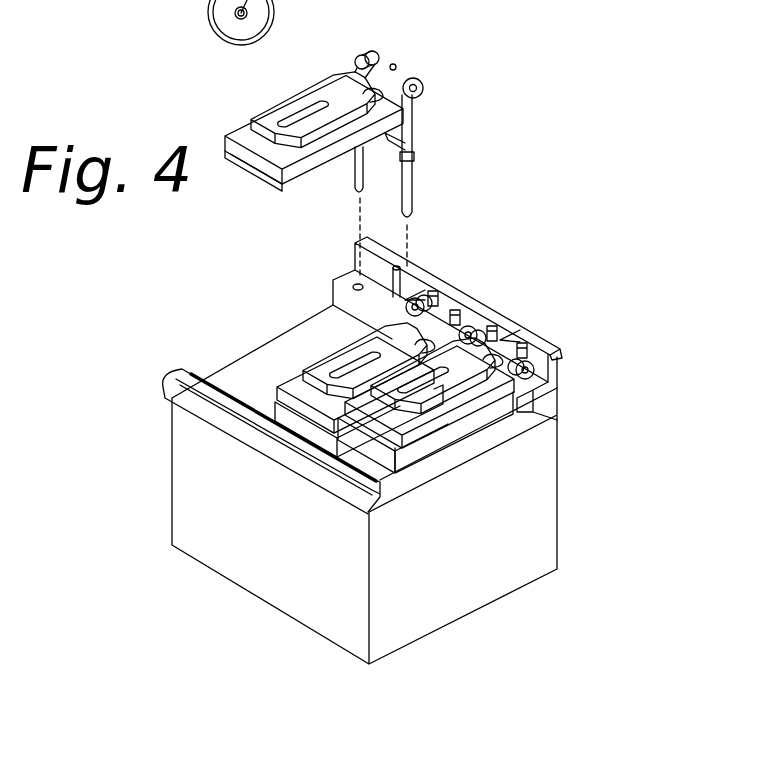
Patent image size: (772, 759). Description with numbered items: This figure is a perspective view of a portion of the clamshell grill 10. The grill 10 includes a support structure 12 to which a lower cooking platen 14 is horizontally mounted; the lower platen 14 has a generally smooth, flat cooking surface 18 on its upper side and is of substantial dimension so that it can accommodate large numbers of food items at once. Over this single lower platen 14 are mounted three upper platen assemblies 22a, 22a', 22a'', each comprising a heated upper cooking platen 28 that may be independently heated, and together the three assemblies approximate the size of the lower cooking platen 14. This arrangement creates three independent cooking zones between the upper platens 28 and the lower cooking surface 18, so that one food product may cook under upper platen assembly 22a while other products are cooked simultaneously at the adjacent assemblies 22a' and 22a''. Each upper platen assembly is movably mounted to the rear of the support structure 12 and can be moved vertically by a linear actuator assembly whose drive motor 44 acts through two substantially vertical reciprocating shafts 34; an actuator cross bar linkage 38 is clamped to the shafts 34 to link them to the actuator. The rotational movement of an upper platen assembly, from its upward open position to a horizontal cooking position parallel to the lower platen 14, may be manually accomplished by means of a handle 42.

The clamshell grill 10 is at (468, 50).
The support structure 12 is at (88, 460).
The lower cooking platen 14 is at (288, 338).
The cooking surface 18 is at (247, 354).
The upper platen assembly 22a is at (314, 93).
The upper platen assembly 22a' is at (465, 260).
The upper platen assembly 22a'' is at (531, 298).
The upper cooking platen 28 is at (278, 186).
The vertical reciprocating shaft 34 is at (404, 197).
The actuator cross bar linkage 38 is at (418, 135).
The handle 42 is at (240, 168).
The drive motor 44 is at (137, 22).